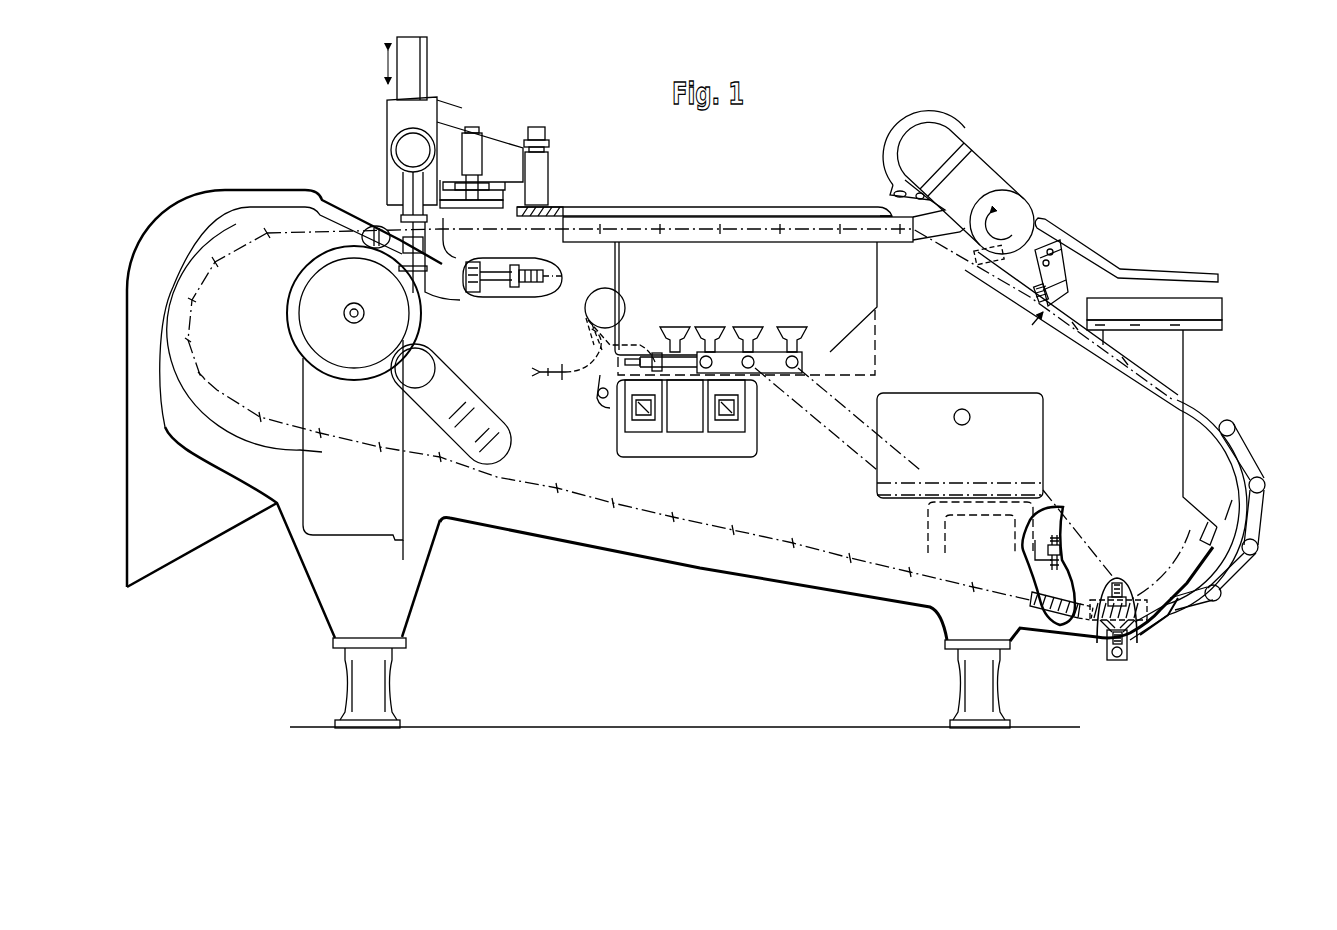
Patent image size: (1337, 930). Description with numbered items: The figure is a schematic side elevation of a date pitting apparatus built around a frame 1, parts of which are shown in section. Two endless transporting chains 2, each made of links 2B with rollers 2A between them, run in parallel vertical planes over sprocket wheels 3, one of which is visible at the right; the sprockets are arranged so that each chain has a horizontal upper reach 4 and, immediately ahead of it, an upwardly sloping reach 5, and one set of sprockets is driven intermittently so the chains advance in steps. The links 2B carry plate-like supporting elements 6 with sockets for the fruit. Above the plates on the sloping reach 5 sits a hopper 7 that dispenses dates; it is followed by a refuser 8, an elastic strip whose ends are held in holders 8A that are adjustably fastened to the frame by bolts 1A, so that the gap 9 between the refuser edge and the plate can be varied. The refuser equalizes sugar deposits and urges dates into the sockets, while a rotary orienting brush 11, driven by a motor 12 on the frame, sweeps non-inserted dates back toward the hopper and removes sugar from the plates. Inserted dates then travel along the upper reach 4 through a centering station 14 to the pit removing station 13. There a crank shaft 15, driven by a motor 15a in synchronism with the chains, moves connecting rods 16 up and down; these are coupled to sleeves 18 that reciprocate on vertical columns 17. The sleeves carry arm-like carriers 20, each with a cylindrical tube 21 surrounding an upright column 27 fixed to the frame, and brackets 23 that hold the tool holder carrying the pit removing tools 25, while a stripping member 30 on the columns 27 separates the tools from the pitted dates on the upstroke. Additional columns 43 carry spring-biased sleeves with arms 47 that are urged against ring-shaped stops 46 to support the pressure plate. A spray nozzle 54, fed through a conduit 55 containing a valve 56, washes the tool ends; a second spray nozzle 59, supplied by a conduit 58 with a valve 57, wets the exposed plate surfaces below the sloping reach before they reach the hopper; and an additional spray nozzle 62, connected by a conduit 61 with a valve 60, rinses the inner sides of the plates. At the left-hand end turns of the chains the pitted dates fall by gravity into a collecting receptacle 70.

The frame 1 is at (601, 527).
The screws or bolts 1A is at (1056, 252).
The endless transporting chains 2 is at (1223, 585).
The rollers 2A is at (1263, 485).
The links 2B is at (1233, 440).
The sprocket wheels 3 is at (1195, 452).
The upper reach 4 is at (683, 230).
The upwardly sloping reach 5 is at (1108, 357).
The supporting elements 6 is at (1128, 588).
The hopper 7 is at (1147, 300).
The refuser 8 is at (1040, 300).
The holders 8A is at (1046, 262).
The distance 9 is at (1050, 320).
The rotary orienting brush 11 is at (1005, 200).
The motor 12 is at (945, 135).
The pit removing station 13 is at (450, 112).
The centering station 14 is at (556, 167).
The crank shaft 15 is at (409, 369).
The motor 15a is at (306, 313).
The connecting rods 16 is at (410, 197).
The vertical columns 17 is at (402, 47).
The sleeves 18 is at (400, 112).
The arm-like carriers 20 is at (504, 150).
The cylindrical tube 21 is at (486, 158).
The brackets 23 is at (432, 157).
The pit removing tools 25 is at (448, 195).
The upright columns 27 is at (472, 135).
The stripping member 30 is at (440, 228).
The upright columns 43 is at (533, 150).
The ring-shaped stops 46 is at (545, 143).
The arms 47 is at (553, 207).
The spray nozzle 54 is at (483, 256).
The conduit 55 is at (597, 302).
The valve 56 is at (707, 328).
The valve 57 is at (795, 328).
The conduit 58 is at (882, 458).
The second spray nozzle 59 is at (1130, 645).
The valve 60 is at (752, 328).
The conduit 61 is at (829, 432).
The additional spray nozzle 62 is at (1058, 563).
The collecting receptacle 70 is at (200, 531).